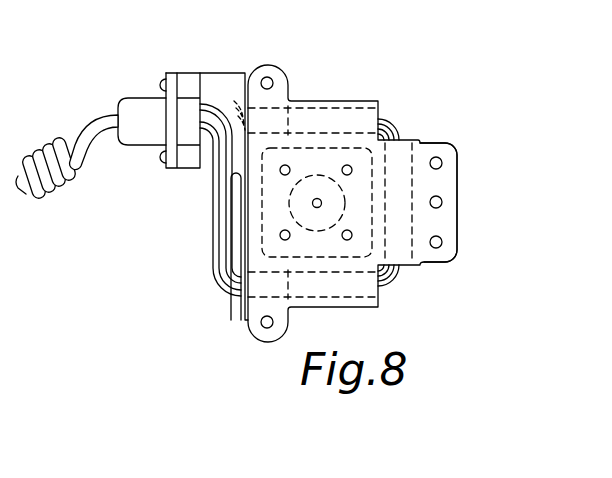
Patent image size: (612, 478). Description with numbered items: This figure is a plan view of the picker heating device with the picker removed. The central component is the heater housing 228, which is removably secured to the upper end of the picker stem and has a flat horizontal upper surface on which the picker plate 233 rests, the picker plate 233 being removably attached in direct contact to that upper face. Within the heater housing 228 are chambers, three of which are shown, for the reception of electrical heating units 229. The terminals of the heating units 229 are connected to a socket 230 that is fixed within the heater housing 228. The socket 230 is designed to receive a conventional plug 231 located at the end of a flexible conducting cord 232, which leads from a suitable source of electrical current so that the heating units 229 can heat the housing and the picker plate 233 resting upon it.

The heater housing 228 is at (375, 85).
The electrical heating units 229 is at (313, 118).
The socket 230 is at (187, 102).
The plug 231 is at (137, 97).
The flexible conducting cord 232 is at (82, 136).
The picker plate 233 is at (425, 187).